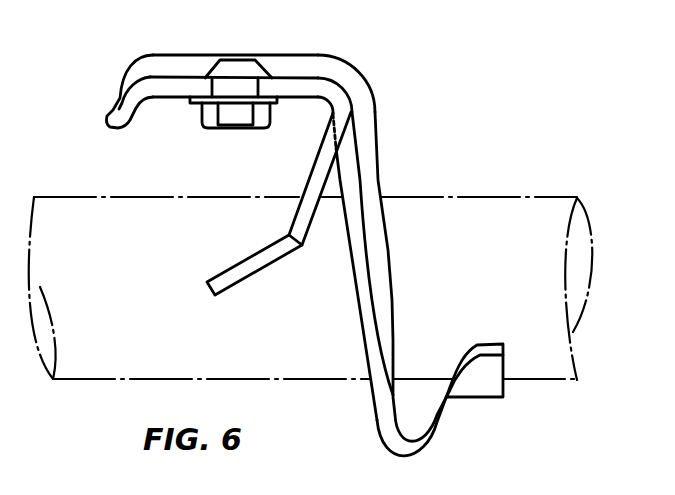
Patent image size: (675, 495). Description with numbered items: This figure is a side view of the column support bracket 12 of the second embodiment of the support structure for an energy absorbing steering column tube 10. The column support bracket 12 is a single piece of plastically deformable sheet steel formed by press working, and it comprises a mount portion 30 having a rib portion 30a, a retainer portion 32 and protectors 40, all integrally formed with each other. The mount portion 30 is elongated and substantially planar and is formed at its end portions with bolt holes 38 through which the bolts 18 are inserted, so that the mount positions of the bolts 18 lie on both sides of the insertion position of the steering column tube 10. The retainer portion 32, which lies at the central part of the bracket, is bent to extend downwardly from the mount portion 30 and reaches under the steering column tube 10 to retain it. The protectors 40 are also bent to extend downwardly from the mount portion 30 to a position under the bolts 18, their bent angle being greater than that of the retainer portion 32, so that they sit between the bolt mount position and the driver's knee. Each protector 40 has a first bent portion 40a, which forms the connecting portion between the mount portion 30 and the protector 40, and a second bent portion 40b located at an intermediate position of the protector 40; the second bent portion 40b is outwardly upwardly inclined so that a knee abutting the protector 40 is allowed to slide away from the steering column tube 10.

The steering column tube 10 is at (488, 198).
The column support bracket 12 is at (150, 50).
The bolt 18 is at (230, 123).
The mount portion 30 is at (287, 88).
The rib portion 30a is at (313, 62).
The retainer portion 32 is at (367, 287).
The bolt hole 38 is at (208, 79).
The protector 40 is at (327, 177).
The first bent portion 40a is at (345, 95).
The second bent portion 40b is at (300, 247).